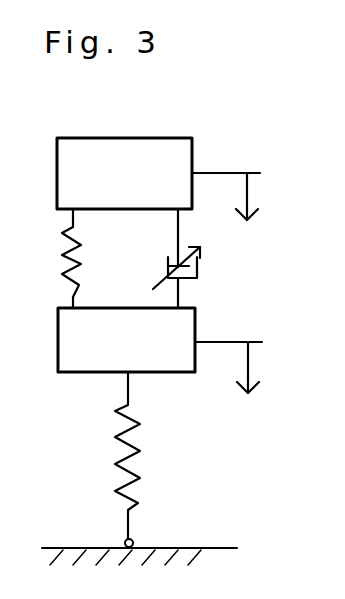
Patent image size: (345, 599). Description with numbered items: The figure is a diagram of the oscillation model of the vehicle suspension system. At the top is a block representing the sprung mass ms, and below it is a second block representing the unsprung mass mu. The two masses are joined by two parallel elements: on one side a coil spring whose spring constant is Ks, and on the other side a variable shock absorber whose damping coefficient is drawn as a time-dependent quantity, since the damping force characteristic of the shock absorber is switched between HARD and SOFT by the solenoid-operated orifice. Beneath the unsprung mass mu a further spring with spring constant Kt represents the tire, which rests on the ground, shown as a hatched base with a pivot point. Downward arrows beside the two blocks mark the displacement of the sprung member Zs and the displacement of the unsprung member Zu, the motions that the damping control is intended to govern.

The sprung mass ms is at (124, 173).
The unsprung mass mu is at (126, 340).
The spring constant of the coil spring Ks is at (50, 258).
The spring constant of the tire Kt is at (105, 455).
The displacement of the sprung member Zs is at (246, 202).
The displacement of the unsprung member Zu is at (249, 383).